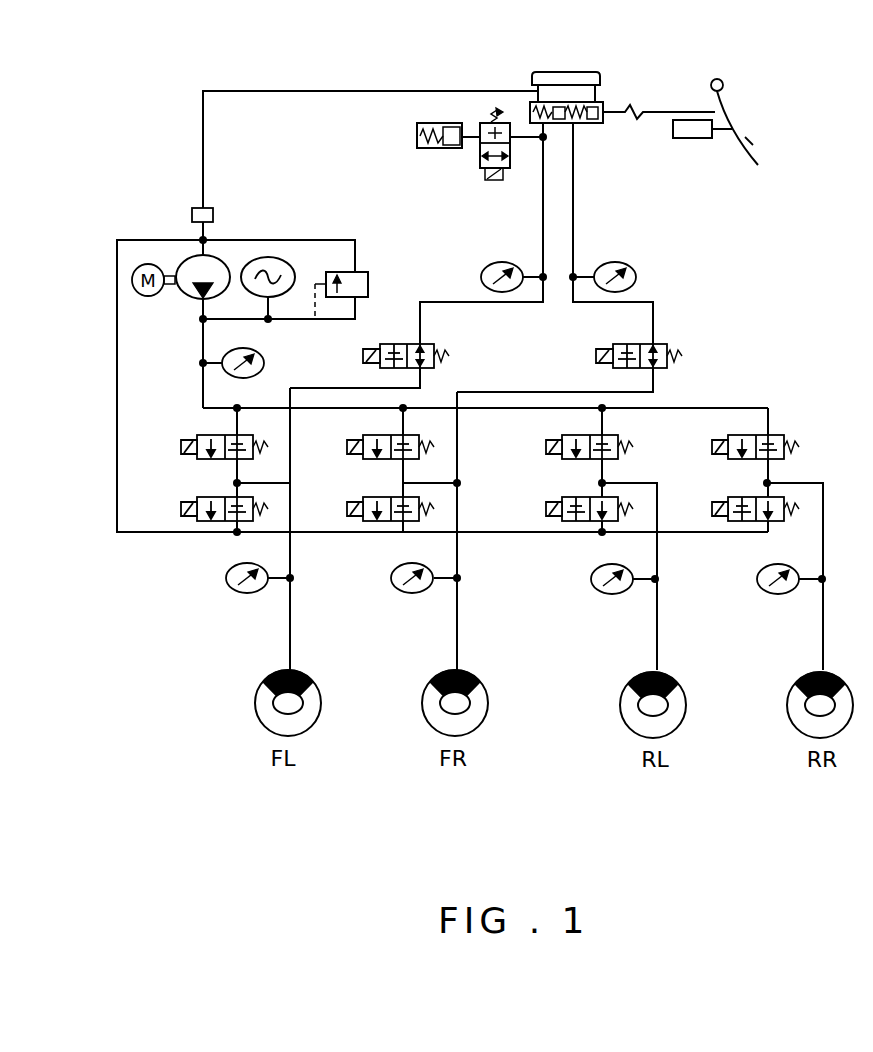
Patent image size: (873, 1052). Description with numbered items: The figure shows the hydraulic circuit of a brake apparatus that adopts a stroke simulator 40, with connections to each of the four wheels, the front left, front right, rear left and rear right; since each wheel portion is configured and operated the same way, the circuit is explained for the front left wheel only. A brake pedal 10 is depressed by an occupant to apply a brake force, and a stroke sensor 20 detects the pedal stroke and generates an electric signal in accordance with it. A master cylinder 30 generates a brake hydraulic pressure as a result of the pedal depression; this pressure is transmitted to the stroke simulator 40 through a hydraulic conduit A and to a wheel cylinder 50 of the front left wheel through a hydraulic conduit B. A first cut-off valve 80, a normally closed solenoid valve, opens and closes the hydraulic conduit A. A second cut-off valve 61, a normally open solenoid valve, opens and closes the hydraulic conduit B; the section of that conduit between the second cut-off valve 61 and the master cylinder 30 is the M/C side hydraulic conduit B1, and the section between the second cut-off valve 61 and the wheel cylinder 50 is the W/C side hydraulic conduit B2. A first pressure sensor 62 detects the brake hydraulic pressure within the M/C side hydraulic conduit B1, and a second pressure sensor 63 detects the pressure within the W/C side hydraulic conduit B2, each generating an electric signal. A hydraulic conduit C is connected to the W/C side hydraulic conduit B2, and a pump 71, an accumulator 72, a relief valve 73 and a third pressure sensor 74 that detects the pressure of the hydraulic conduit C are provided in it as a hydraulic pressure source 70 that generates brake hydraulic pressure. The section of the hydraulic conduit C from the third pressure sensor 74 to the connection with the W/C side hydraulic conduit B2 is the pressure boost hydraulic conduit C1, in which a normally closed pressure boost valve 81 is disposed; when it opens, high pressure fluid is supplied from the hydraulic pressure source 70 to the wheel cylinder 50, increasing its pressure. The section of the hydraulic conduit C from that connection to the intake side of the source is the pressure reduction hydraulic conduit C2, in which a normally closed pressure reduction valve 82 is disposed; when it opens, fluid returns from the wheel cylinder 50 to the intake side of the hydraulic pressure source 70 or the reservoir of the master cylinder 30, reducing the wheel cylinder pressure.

The brake pedal 10 is at (757, 150).
The stroke sensor 20 is at (692, 138).
The master cylinder 30 is at (605, 101).
The stroke simulator 40 is at (440, 123).
The wheel cylinder 50 is at (267, 683).
The second cut-off valve 61 is at (394, 345).
The first pressure sensor 62 is at (490, 265).
The second pressure sensor 63 is at (226, 578).
The hydraulic pressure source 70 is at (294, 264).
The pump 71 is at (226, 257).
The accumulator 72 is at (288, 259).
The relief valve 73 is at (363, 272).
The third pressure sensor 74 is at (264, 363).
The first cut-off valve 80 is at (504, 123).
The pressure boost valve 81 is at (196, 459).
The pressure reduction valve 82 is at (196, 520).
The hydraulic conduit A is at (519, 140).
The hydraulic conduit B is at (507, 326).
The M/C side hydraulic conduit B1 is at (483, 304).
The W/C side hydraulic conduit B2 is at (422, 377).
The hydraulic conduit C is at (58, 347).
The pressure boost hydraulic conduit C1 is at (203, 383).
The pressure reduction hydraulic conduit C2 is at (117, 392).